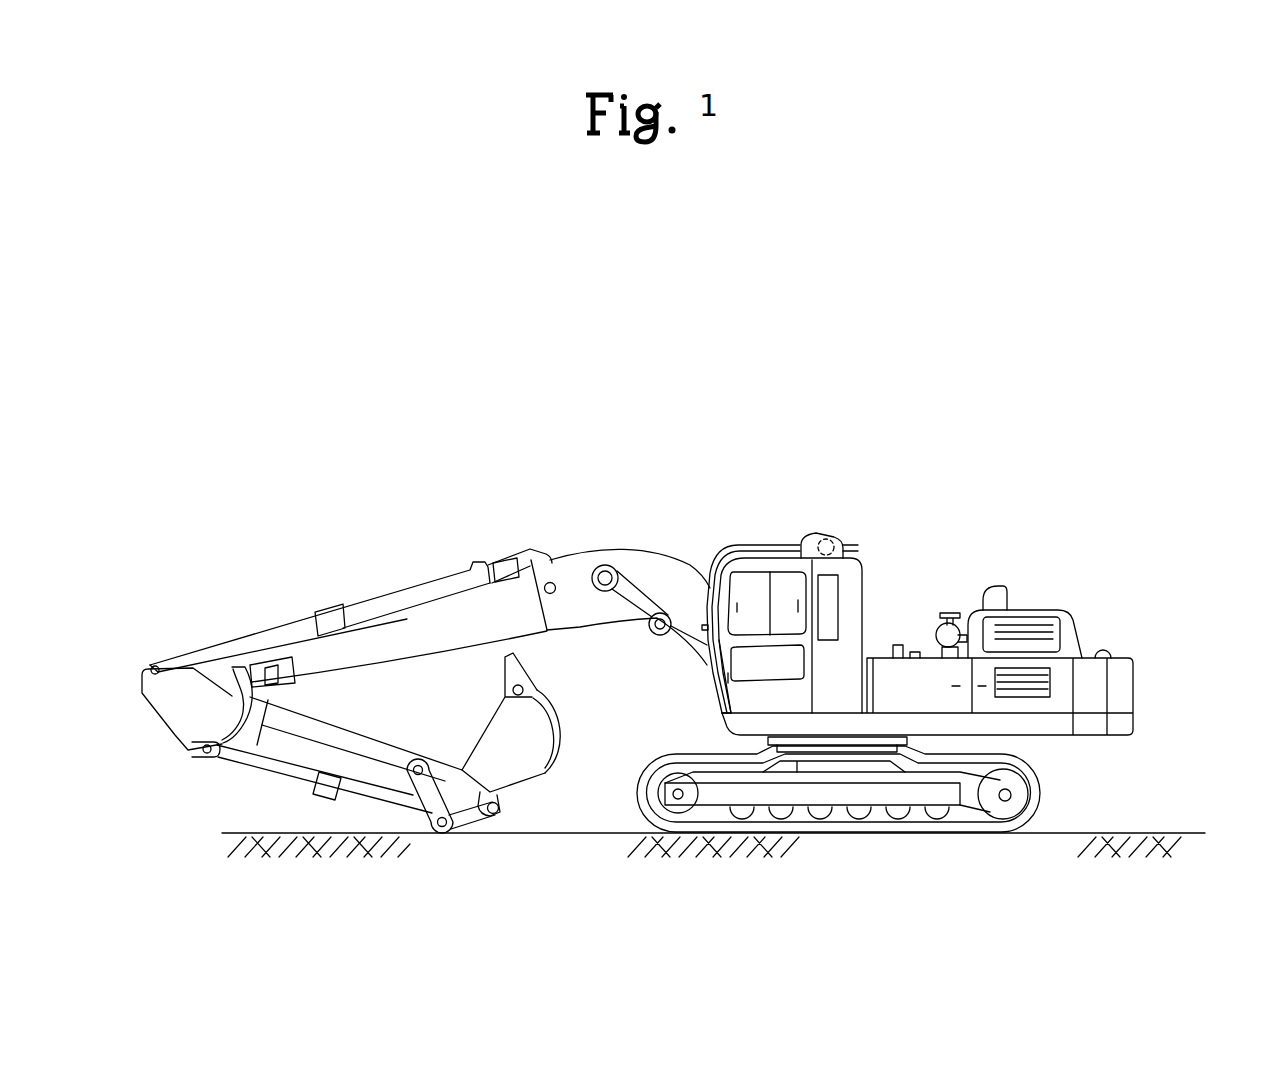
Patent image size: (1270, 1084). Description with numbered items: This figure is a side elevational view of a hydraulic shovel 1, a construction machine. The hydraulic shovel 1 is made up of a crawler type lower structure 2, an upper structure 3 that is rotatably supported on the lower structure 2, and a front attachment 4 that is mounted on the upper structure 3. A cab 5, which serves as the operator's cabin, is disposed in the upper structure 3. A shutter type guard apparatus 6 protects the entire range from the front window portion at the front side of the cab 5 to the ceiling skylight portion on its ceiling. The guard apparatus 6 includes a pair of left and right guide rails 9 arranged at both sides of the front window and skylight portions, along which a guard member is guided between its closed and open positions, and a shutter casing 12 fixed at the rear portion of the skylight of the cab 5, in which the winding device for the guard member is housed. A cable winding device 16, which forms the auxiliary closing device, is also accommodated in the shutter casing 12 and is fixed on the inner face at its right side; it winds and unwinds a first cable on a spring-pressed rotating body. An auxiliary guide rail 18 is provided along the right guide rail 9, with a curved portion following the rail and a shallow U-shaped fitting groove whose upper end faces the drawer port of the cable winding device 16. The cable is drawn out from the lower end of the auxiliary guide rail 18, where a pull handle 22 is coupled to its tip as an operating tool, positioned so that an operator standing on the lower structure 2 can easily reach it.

The hydraulic shovel 1 is at (1052, 425).
The lower structure 2 is at (923, 805).
The upper structure 3 is at (1160, 609).
The front attachment 4 is at (471, 528).
The cab 5 is at (833, 474).
The shutter type guard apparatus 6 is at (685, 522).
The guide rail 9 is at (710, 699).
The shutter casing 12 is at (823, 532).
The cable winding device 16 is at (844, 545).
The auxiliary guide rail 18 is at (733, 557).
The pull handle 22 is at (705, 638).